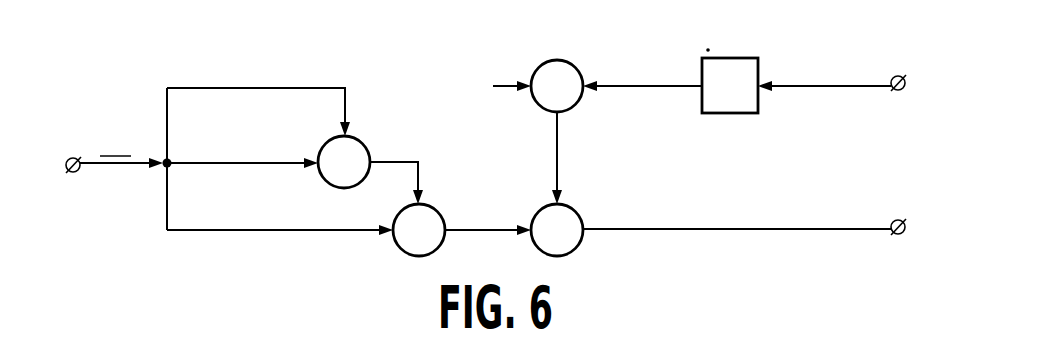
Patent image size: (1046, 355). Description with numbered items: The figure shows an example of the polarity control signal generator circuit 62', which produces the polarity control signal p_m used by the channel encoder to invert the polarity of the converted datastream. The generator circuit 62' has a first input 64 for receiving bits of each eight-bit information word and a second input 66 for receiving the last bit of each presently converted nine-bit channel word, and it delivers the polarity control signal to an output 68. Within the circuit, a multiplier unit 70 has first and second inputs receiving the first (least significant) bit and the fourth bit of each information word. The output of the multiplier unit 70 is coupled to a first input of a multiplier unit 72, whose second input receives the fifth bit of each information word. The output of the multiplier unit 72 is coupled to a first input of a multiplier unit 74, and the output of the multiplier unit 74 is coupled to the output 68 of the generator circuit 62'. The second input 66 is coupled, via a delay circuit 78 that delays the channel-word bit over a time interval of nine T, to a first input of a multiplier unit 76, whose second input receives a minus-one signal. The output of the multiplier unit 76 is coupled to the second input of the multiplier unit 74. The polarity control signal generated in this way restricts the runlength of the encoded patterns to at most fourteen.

The polarity control signal generator circuit 62' is at (220, 131).
The first input 64 is at (75, 173).
The second input 66 is at (900, 91).
The output 68 is at (900, 235).
The multiplier unit 70 is at (362, 147).
The multiplier unit 72 is at (437, 212).
The multiplier unit 74 is at (575, 213).
The multiplier unit 76 is at (557, 59).
The delay circuit 78 is at (729, 57).